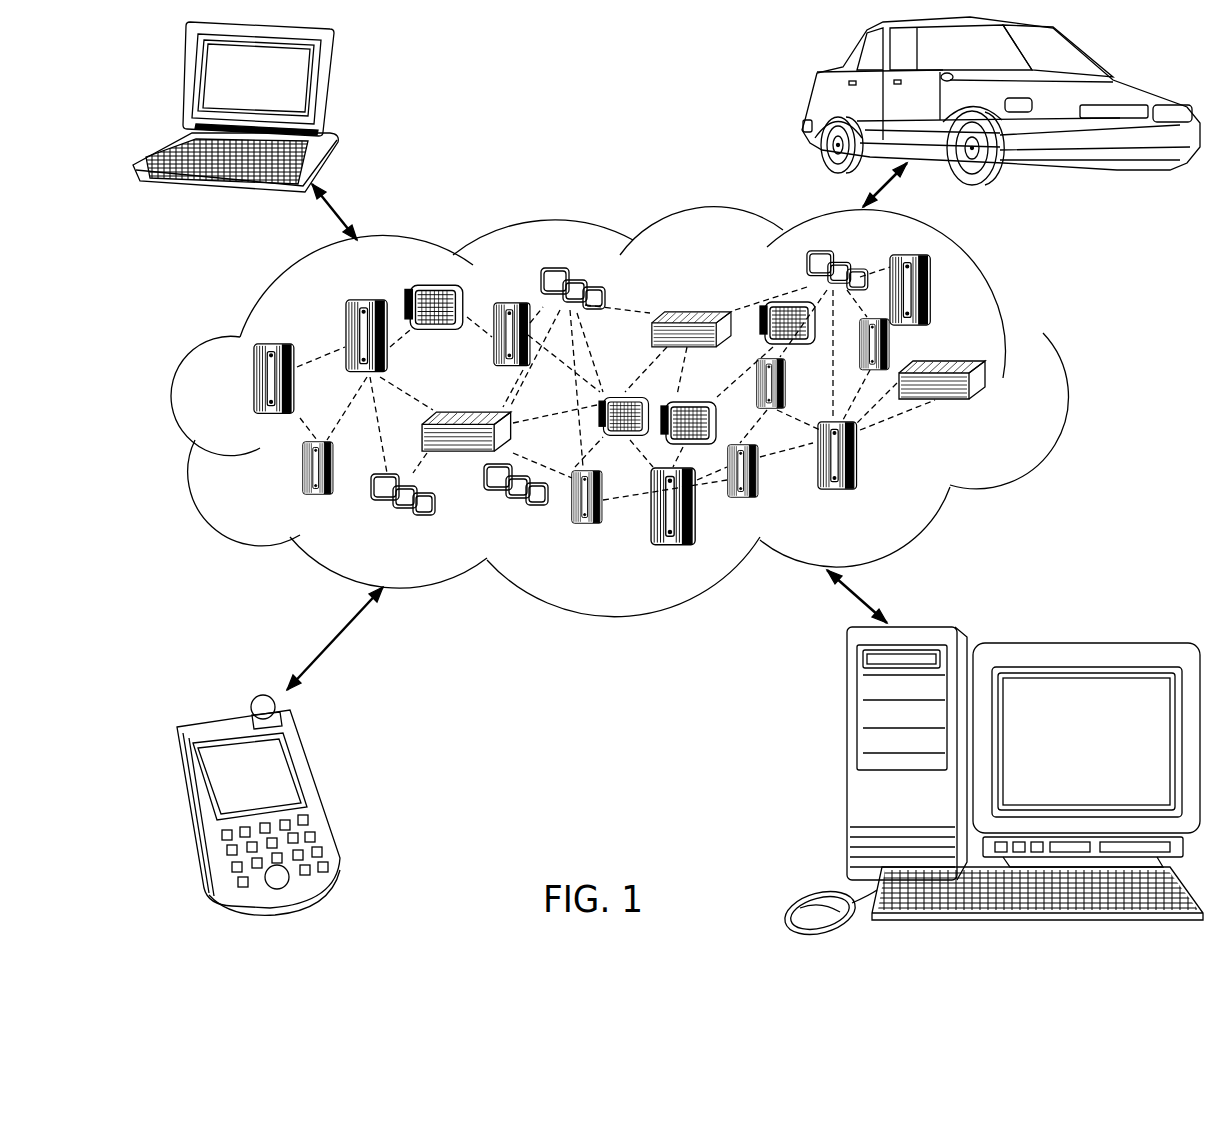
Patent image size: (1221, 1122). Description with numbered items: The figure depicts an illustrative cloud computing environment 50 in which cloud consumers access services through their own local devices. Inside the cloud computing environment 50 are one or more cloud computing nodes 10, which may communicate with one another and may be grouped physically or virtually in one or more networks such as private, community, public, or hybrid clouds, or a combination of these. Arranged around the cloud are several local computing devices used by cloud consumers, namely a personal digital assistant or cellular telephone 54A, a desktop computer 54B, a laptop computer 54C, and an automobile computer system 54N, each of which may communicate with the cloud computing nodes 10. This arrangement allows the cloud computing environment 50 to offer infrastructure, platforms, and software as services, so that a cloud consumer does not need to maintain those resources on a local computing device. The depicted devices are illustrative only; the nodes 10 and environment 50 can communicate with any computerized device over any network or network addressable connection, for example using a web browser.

The cloud computing nodes 10 is at (1026, 411).
The cloud computing environment 50 is at (1043, 333).
The personal digital assistant (PDA) or cellular telephone 54A is at (320, 787).
The desktop computer 54B is at (843, 763).
The laptop computer 54C is at (330, 80).
The automobile computer system 54N is at (812, 92).